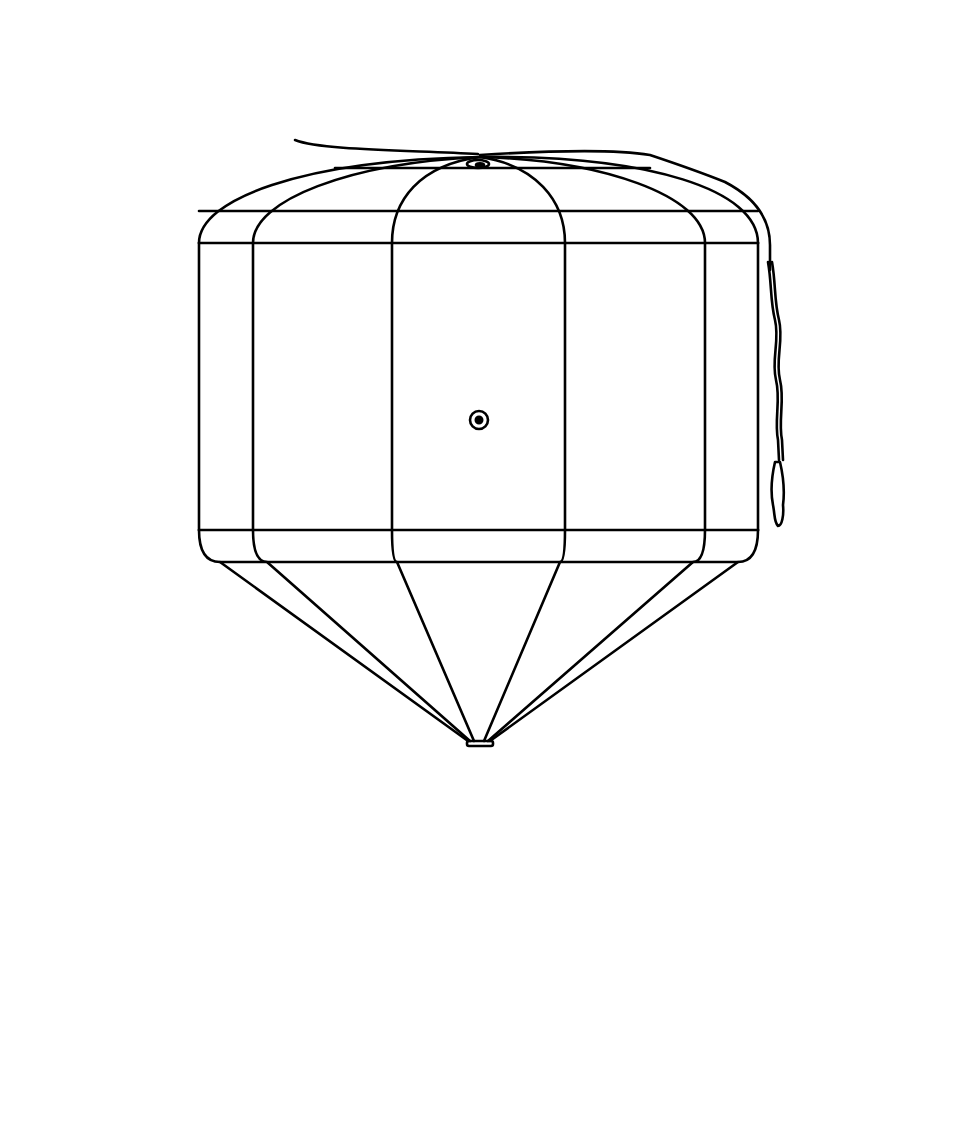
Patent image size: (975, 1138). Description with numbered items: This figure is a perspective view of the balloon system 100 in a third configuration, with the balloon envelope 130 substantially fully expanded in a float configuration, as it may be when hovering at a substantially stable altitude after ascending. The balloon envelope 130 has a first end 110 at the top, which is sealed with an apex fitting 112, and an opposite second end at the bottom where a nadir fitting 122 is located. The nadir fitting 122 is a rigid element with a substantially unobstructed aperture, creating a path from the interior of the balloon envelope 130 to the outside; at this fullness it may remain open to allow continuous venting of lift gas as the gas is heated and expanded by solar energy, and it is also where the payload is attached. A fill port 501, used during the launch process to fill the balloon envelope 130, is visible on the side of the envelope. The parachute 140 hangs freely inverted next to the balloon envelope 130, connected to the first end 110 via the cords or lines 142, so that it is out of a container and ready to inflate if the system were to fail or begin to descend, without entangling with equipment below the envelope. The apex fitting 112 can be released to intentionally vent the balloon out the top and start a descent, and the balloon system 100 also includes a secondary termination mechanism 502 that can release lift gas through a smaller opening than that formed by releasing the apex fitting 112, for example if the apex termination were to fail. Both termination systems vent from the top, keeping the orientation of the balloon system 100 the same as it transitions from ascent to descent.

The balloon system 100 is at (200, 66).
The first end 110 is at (512, 143).
The apex fitting 112 is at (474, 150).
The nadir fitting 122 is at (464, 752).
The balloon envelope 130 is at (190, 356).
The parachute 140 is at (792, 488).
The cords or lines 142 is at (780, 377).
The fill port 501 is at (458, 420).
The secondary termination mechanism 502 is at (295, 140).